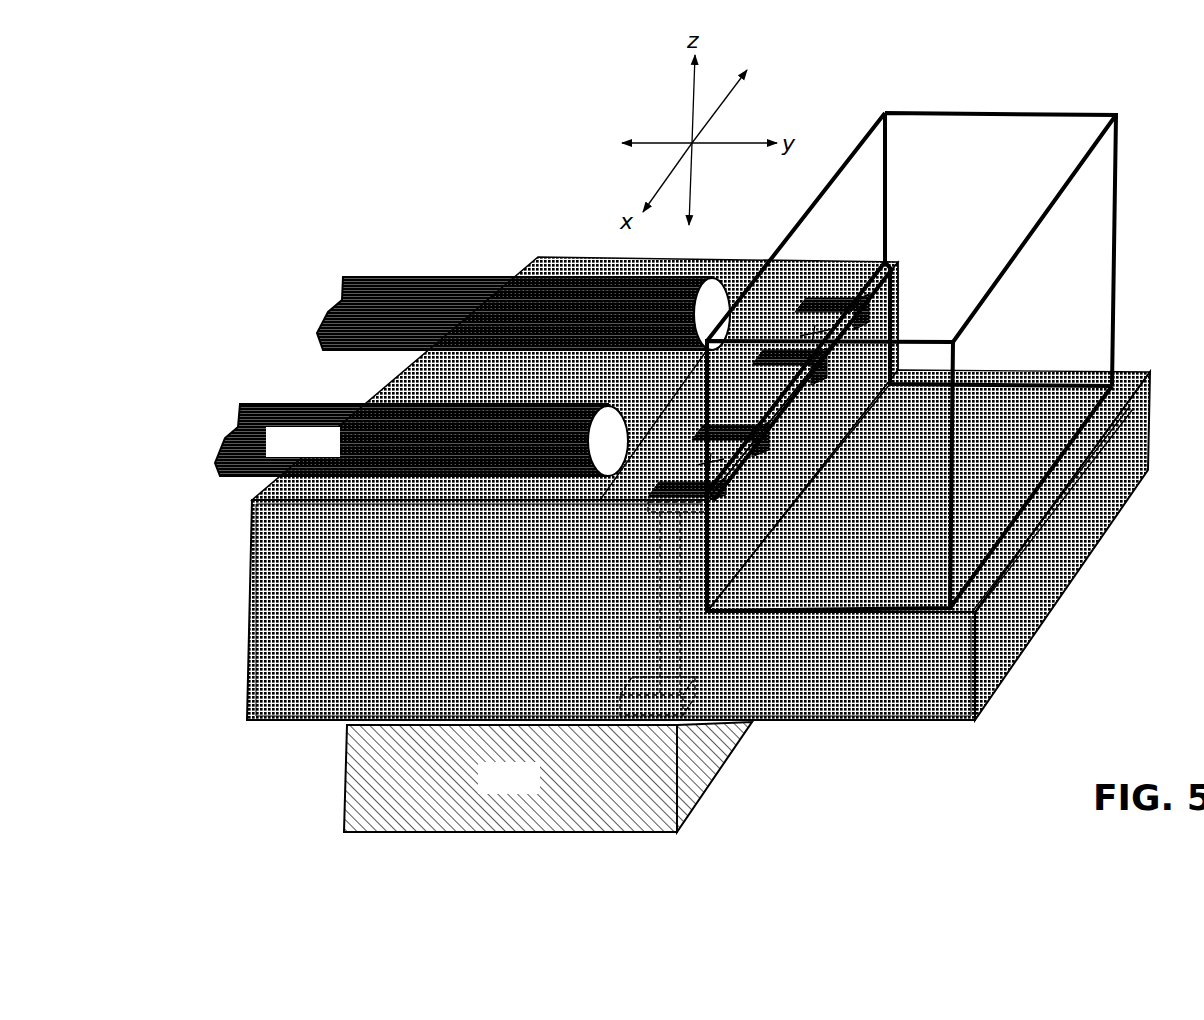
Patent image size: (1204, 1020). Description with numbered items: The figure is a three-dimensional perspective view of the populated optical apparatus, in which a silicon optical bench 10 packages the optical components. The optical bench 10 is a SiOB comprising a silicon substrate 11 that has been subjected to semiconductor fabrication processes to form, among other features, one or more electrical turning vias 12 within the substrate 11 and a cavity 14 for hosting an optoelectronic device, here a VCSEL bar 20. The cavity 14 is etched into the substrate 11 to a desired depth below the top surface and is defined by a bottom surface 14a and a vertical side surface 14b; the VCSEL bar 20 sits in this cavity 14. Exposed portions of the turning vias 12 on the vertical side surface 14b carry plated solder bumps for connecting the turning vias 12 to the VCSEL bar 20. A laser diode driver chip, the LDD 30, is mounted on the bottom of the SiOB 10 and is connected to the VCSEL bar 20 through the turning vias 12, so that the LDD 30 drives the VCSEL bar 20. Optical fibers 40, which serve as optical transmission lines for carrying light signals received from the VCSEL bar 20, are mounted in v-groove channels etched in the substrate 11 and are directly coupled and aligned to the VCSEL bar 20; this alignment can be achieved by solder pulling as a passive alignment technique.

The optical bench 10 is at (670, 488).
The silicon substrate 11 is at (327, 557).
The electrical turning via 12 is at (663, 602).
The cavity 14 is at (926, 509).
The bottom surface 14a is at (1073, 452).
The vertical side surface 14b is at (750, 535).
The VCSEL bar 20 is at (1123, 179).
The laser diode driver IC chip 30 is at (344, 774).
The optical fibers 40 is at (272, 400).